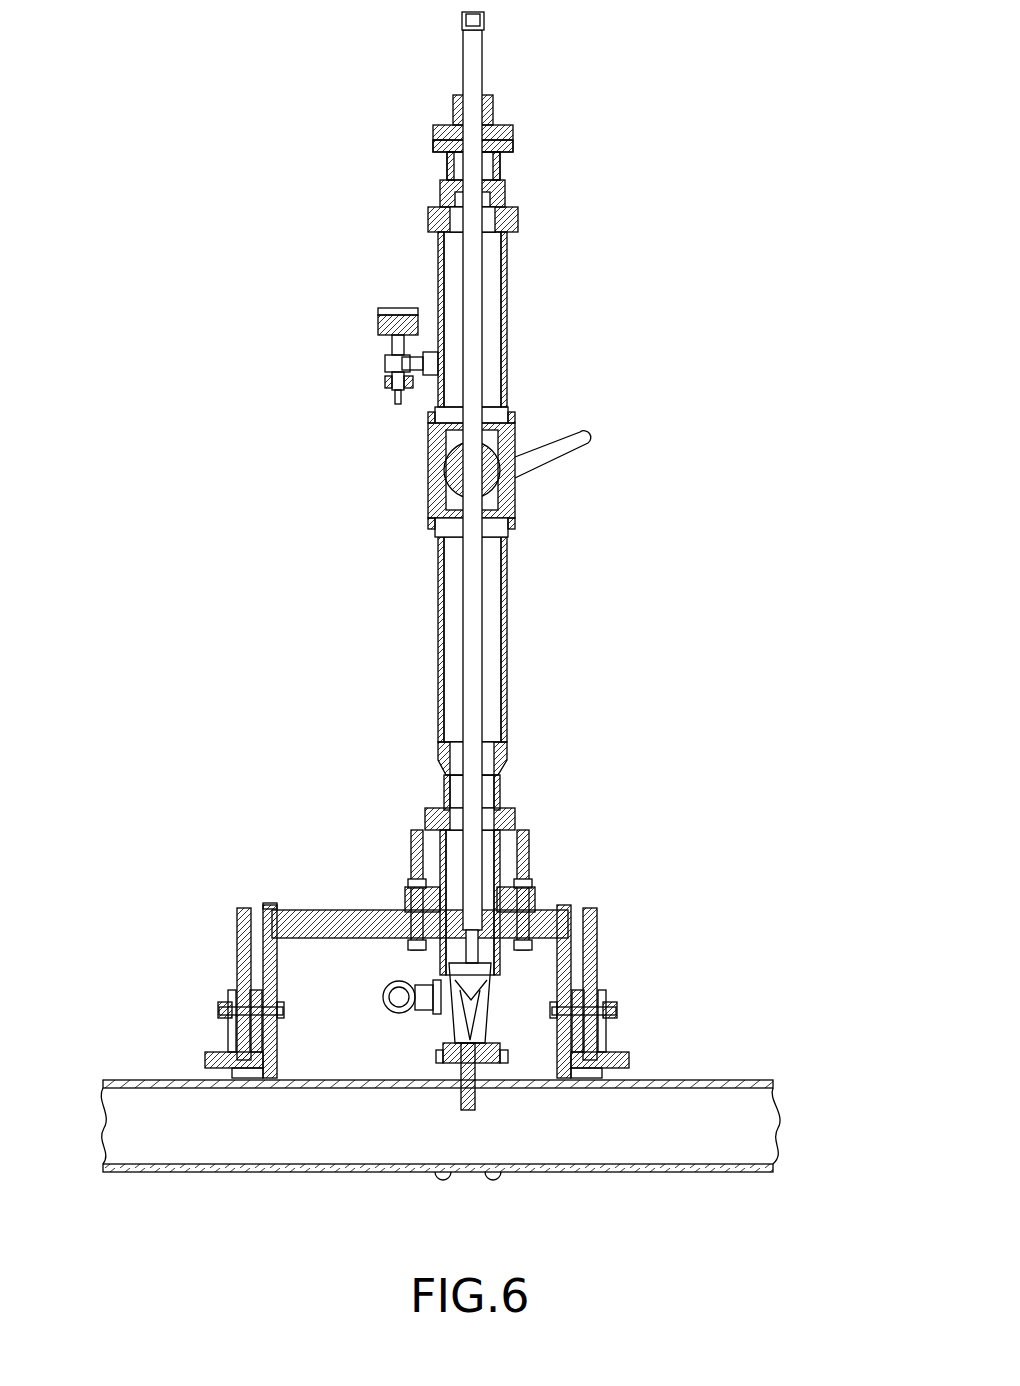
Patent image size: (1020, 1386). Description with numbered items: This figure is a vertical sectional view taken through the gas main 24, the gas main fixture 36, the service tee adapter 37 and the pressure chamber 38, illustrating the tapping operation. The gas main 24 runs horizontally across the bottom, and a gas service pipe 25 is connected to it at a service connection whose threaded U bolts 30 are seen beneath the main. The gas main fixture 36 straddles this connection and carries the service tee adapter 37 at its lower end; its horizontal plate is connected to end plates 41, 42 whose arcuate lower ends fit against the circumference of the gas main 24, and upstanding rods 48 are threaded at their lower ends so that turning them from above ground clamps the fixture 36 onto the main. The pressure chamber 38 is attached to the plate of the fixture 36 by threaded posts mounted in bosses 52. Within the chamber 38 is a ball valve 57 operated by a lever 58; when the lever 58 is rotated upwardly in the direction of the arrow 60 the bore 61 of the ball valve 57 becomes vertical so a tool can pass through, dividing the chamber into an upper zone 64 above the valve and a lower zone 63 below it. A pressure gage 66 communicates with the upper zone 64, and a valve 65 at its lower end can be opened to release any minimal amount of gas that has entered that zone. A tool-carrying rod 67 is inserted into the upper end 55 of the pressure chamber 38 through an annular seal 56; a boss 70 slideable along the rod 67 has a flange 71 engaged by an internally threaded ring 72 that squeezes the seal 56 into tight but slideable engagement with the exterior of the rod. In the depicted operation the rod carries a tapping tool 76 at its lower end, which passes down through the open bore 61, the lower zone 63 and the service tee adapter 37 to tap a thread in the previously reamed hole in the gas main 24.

The gas main 24 is at (154, 1078).
The gas service pipe 25 is at (385, 998).
The threaded U bolts 30 is at (493, 1178).
The gas main fixture 36 is at (348, 910).
The service tee adapter 37 is at (497, 866).
The pressure chamber 38 is at (537, 319).
The end plate 41 is at (570, 905).
The end plate 42 is at (273, 905).
The upstanding rods 48 is at (597, 942).
The bosses 52 is at (537, 900).
The upper end of the pressure chamber 55 is at (502, 164).
The annular seal 56 is at (488, 147).
The ball valve 57 is at (523, 461).
The lever 58 is at (598, 437).
The arrow 60 is at (602, 470).
The bore 61 is at (455, 468).
The lower zone 63 is at (492, 608).
The upper zone 64 is at (490, 308).
The valve 65 is at (396, 396).
The pressure gage 66 is at (378, 320).
The rod 67 is at (476, 43).
The boss 70 is at (495, 97).
The flange 71 is at (452, 128).
The internally threaded ring 72 is at (433, 136).
The tapping tool 76 is at (472, 1072).